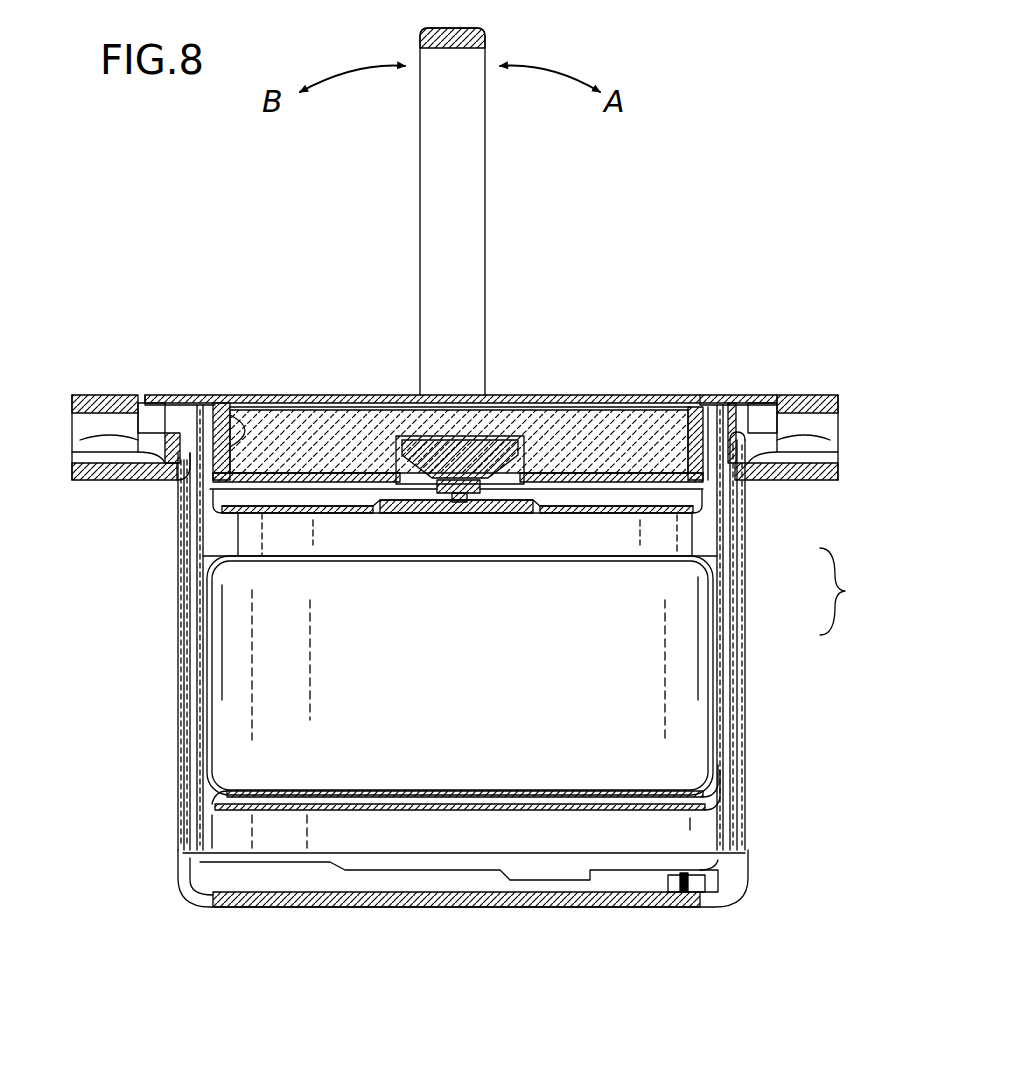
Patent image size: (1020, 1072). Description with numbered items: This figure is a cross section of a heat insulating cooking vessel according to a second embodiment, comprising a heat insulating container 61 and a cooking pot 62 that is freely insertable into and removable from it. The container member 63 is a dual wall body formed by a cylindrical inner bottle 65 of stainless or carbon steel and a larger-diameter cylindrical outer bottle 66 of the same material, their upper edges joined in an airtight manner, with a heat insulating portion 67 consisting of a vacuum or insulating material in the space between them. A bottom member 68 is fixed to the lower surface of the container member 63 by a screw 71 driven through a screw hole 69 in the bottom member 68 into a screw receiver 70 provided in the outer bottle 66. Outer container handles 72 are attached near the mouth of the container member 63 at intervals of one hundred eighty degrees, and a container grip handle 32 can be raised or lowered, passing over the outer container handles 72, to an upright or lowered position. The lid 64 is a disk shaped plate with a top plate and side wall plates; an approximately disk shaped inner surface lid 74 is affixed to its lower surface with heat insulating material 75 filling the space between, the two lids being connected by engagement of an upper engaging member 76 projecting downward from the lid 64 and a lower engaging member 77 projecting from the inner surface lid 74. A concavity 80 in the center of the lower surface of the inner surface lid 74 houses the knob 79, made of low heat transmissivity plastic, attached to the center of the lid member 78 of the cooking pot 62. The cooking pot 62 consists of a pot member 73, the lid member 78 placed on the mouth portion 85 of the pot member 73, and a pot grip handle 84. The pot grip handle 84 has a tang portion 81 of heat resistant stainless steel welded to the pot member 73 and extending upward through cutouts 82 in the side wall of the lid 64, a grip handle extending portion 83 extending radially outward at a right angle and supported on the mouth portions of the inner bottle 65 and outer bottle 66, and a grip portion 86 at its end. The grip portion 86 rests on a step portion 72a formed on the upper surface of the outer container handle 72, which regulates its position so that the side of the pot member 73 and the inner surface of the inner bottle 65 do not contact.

The grip handle 32 is at (466, 273).
The heat insulating container 61 is at (752, 538).
The cooking pot 62 is at (207, 578).
The container member 63 is at (855, 591).
The lid 64 is at (333, 392).
The inner bottle 65 is at (732, 598).
The outer bottle 66 is at (743, 653).
The heat insulating portion 67 is at (705, 827).
The bottom member 68 is at (743, 883).
The screw hole 69 is at (672, 887).
The screw receiver 70 is at (700, 888).
The screw 71 is at (684, 893).
The outer container handle 72 is at (72, 462).
The step portion 72a is at (140, 452).
The pot member 73 is at (617, 395).
The inner surface lid 74 is at (703, 437).
The heat insulating material 75 is at (390, 440).
The upper engaging member 76 is at (218, 418).
The lower engaging member 77 is at (248, 420).
The lid member 78 is at (215, 520).
The knob 79 is at (527, 460).
The concavity 80 is at (455, 442).
The tang portion 81 is at (207, 515).
The cutout 82 is at (706, 405).
The grip handle extending portion 83 is at (148, 397).
The pot grip handle 84 is at (180, 482).
The mouth portion 85 is at (200, 555).
The grip portion 86 is at (152, 420).